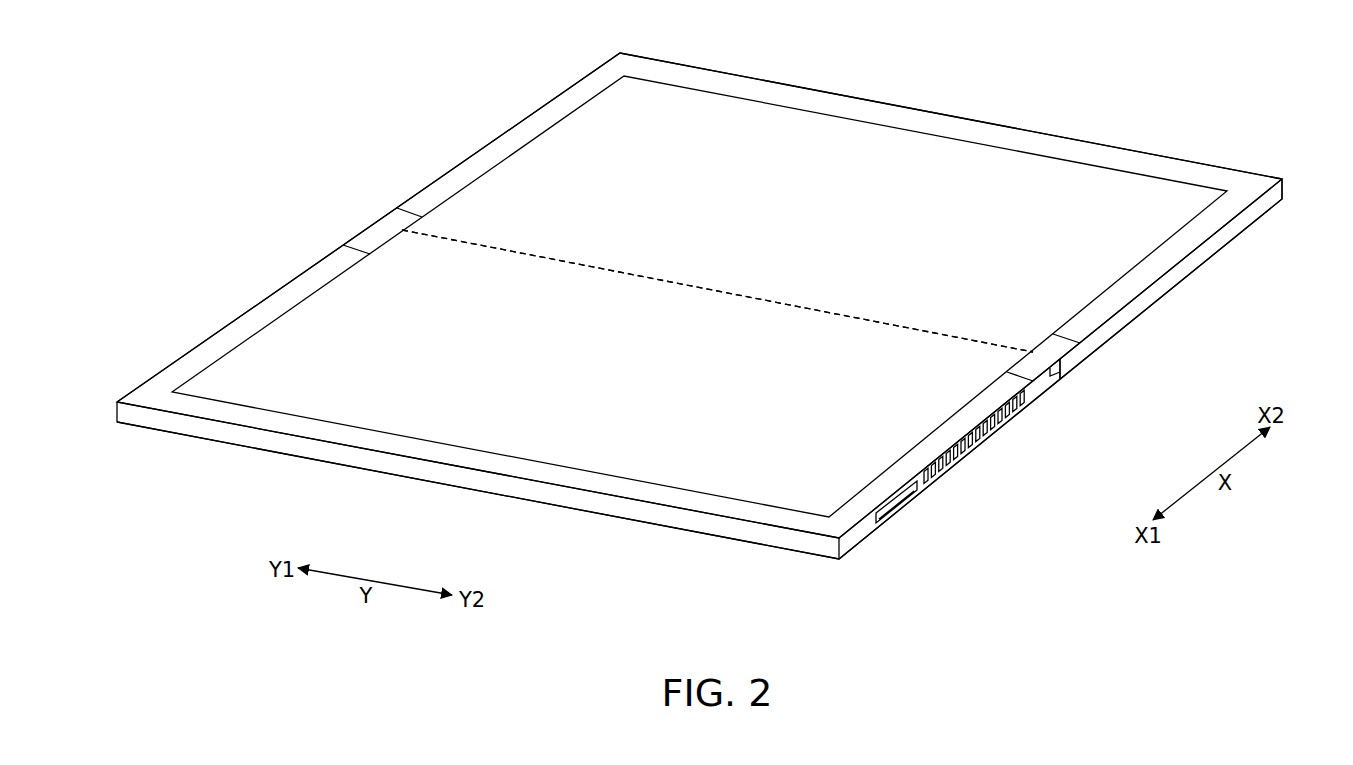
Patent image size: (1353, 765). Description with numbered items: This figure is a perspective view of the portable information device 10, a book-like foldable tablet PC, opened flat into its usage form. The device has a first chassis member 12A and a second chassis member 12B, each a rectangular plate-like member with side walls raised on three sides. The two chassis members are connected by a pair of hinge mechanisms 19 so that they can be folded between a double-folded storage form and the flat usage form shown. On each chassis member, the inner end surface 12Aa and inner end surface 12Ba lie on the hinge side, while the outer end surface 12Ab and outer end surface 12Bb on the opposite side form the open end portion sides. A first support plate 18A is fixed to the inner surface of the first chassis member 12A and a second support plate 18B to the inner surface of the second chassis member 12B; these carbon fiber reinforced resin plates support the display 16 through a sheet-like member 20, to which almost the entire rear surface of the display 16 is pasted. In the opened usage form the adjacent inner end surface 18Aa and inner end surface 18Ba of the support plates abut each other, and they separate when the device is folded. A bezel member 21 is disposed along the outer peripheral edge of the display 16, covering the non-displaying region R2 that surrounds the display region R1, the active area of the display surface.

The portable information device 10 is at (235, 65).
The first chassis member 12A is at (250, 305).
The second chassis member 12B is at (504, 128).
The inner end surface of first chassis member 12Aa is at (1066, 371).
The outer end surface of first chassis member 12Ab is at (593, 506).
The inner end surface of second chassis member 12Ba is at (1060, 376).
The outer end surface of second chassis member 12Bb is at (1286, 188).
The display 16 is at (755, 118).
The first support plate 18A is at (743, 475).
The second support plate 18B is at (852, 150).
The inner end surface of first support plate 18Aa is at (648, 268).
The inner end surface of second support plate 18Ba is at (670, 296).
The hinge mechanism 19 is at (377, 223).
The sheet-like member 20 is at (1083, 190).
The bezel member 21 is at (1125, 293).
The display region R1 is at (385, 422).
The non-displaying region R2 is at (948, 123).